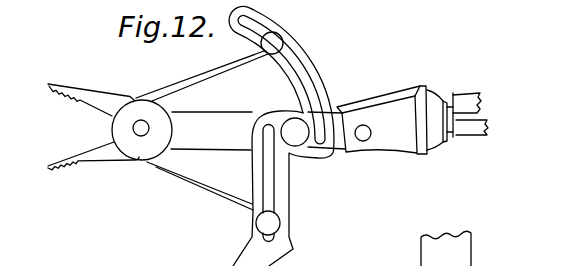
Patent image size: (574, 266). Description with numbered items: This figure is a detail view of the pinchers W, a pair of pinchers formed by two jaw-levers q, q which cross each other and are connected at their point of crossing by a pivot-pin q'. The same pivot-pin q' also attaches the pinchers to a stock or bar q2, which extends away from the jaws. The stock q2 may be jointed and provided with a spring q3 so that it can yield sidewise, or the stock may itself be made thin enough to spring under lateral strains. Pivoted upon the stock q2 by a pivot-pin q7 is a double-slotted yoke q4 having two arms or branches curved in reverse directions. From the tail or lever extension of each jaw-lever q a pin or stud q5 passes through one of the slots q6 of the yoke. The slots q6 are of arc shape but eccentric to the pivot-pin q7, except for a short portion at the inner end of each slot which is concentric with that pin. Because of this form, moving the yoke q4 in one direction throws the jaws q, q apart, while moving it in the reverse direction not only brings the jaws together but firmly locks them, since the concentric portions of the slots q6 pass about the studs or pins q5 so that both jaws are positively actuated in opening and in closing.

The jaw-levers q is at (93, 130).
The pivot-pin q' is at (142, 130).
The stock or bar q2 is at (258, 131).
The spring q3 is at (389, 97).
The double-slotted yoke q4 is at (280, 116).
The pin or stud q5 is at (282, 40).
The slots q6 is at (303, 75).
The pivot-pin q7 is at (296, 141).
The pinchers W is at (62, 129).